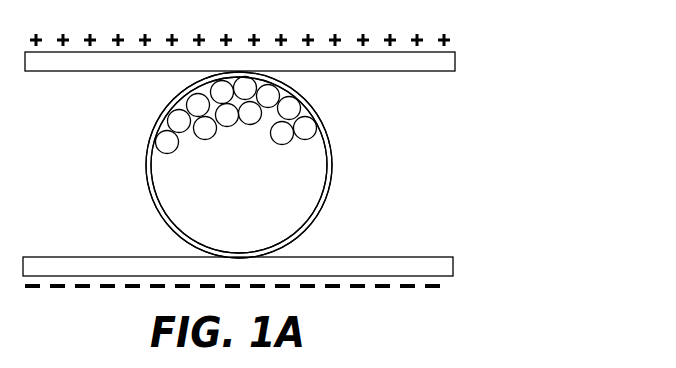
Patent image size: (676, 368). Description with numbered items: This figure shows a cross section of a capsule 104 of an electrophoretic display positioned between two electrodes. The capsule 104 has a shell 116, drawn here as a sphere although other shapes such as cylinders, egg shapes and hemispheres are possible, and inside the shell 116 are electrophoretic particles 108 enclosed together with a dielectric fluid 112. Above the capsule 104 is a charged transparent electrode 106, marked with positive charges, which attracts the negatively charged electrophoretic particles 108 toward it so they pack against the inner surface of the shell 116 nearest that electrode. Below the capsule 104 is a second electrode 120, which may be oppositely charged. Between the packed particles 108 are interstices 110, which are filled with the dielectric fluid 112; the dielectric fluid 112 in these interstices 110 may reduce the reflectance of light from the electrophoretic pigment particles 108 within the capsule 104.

The capsule 104 is at (128, 164).
The charged transparent electrode 106 is at (486, 46).
The electrophoretic particles 108 is at (308, 128).
The interstices 110 is at (165, 125).
The dielectric fluid 112 is at (170, 190).
The shell 116 is at (310, 218).
The second electrode 120 is at (445, 267).